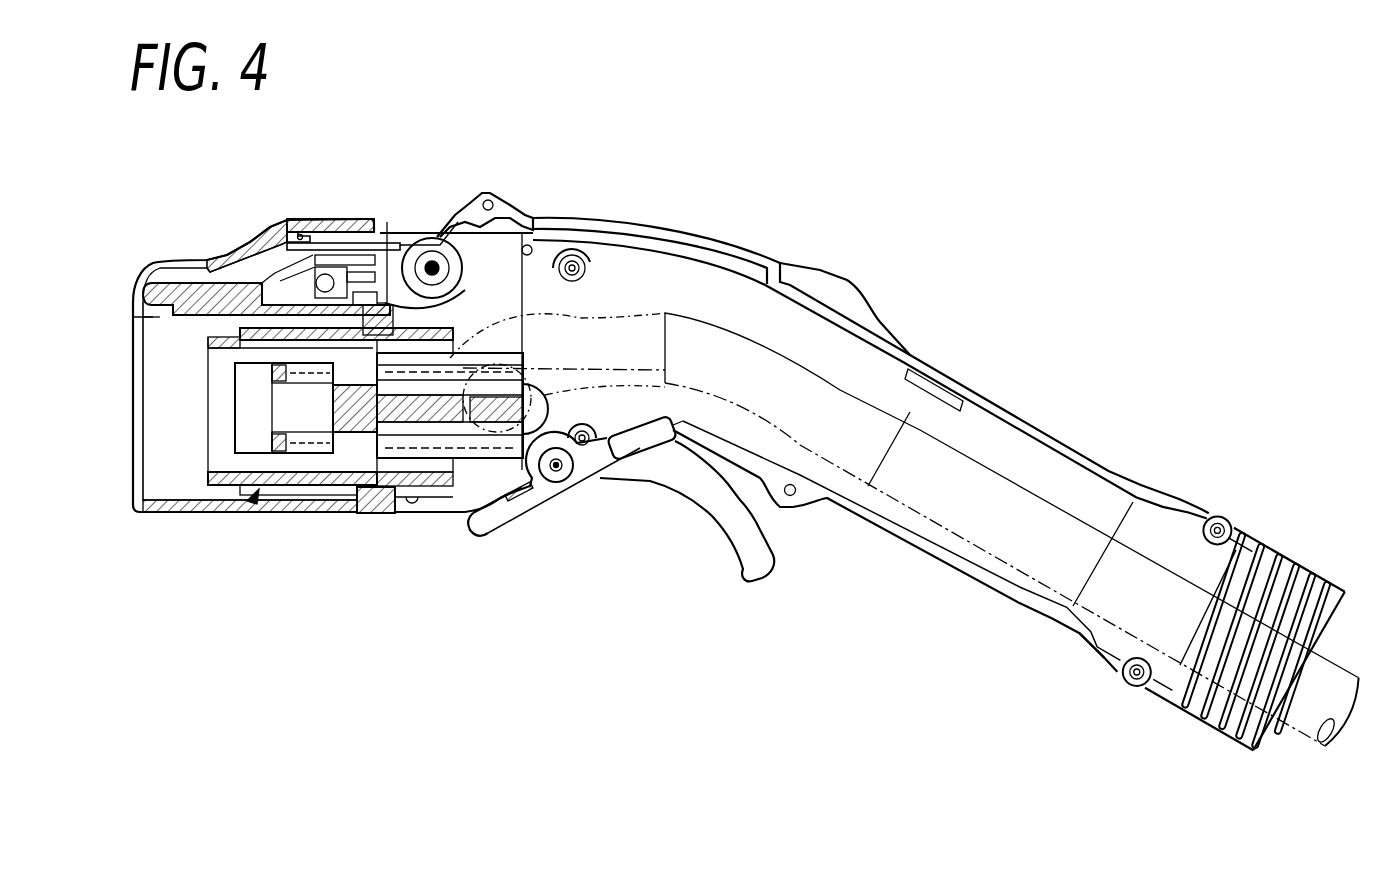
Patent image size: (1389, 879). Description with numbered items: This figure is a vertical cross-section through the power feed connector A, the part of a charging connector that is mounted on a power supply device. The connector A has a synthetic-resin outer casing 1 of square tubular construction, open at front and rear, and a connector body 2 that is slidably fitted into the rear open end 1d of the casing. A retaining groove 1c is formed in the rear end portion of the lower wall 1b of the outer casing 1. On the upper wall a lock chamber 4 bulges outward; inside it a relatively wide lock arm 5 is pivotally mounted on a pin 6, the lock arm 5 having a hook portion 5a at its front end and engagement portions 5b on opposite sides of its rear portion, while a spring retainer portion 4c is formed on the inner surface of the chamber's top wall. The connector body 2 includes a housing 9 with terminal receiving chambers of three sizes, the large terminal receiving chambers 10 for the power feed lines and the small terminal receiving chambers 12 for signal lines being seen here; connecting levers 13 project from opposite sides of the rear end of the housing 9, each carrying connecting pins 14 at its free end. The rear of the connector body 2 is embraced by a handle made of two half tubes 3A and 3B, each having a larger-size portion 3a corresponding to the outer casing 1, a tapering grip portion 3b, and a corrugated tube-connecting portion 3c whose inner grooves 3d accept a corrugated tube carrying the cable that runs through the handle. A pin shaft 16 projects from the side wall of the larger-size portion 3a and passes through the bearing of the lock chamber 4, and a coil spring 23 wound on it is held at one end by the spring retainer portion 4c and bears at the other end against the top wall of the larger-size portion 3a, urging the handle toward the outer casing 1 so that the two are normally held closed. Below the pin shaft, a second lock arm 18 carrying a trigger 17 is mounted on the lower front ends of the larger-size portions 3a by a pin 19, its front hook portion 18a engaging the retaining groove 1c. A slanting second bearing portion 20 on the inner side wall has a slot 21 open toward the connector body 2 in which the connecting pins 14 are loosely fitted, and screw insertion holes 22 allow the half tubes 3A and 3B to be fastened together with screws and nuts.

The power feed connector A is at (833, 240).
The outer casing 1 is at (168, 262).
The lower wall 1b is at (160, 513).
The retaining groove 1c is at (367, 505).
The rear open end 1d is at (413, 494).
The connector body 2 is at (250, 500).
The half tube 3A is at (1037, 410).
The half tube 3B is at (946, 493).
The larger-size portion 3a is at (667, 280).
The tapering grip portion 3b is at (1087, 490).
The corrugated tube-connecting portion 3c is at (1257, 540).
The grooves 3d is at (1288, 567).
The lock chamber 4 is at (358, 228).
The spring retainer portion 4c is at (305, 236).
The lock arm 5 is at (203, 283).
The hook portion 5a is at (160, 320).
The engagement portions 5b is at (335, 255).
The pin 6 is at (293, 246).
The housing 9 is at (315, 500).
The large terminal receiving chambers 10 is at (257, 408).
The small terminal receiving chambers 12 is at (297, 500).
The connecting levers 13 is at (447, 390).
The connecting pins 14 is at (540, 363).
The pin shaft 16 is at (432, 258).
The trigger 17 is at (737, 533).
The second lock arm 18 is at (527, 507).
The hook portion 18a is at (483, 532).
The pin 19 is at (558, 470).
The second bearing portion 20 is at (543, 413).
The slot 21 is at (527, 337).
The screw insertion hole 22 is at (493, 201).
The coil spring 23 is at (510, 228).